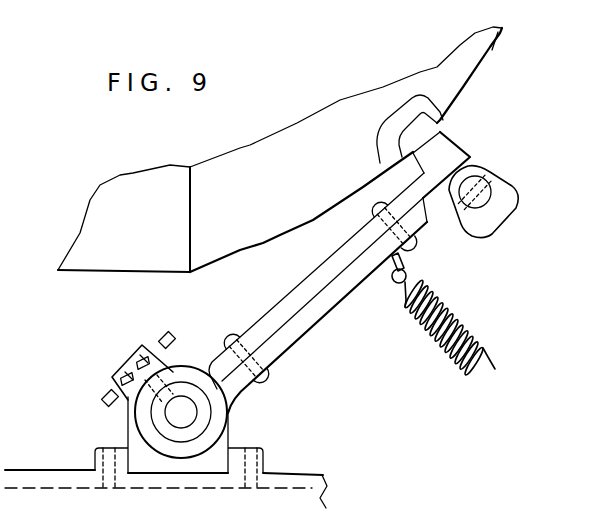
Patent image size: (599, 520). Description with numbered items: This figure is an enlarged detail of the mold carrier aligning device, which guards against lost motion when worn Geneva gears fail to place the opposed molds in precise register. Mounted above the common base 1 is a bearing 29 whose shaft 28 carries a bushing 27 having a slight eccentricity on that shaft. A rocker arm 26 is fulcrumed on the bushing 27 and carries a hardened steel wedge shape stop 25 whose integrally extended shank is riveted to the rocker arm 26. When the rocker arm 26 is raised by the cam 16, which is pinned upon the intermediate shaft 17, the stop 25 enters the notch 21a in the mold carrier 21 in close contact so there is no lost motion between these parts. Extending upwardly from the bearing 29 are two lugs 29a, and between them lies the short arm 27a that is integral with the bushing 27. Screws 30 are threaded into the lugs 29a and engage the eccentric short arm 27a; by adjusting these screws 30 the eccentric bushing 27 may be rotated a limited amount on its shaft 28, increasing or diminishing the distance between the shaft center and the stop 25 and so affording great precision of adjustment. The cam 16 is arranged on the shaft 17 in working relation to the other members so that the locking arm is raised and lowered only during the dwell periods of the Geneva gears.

The common base 1 is at (310, 487).
The cam 16 is at (502, 202).
The intermediate shaft 17 is at (484, 196).
The mold carrier 21 is at (318, 118).
The notch 21a is at (442, 122).
The wedge shape stop 25 is at (445, 147).
The rocker arm 26 is at (300, 330).
The bushing 27 is at (160, 420).
The short arm 27a is at (130, 363).
The shaft 28 is at (187, 417).
The bearing 29 is at (221, 446).
The lug 29a is at (145, 343).
The screw 30 is at (176, 339).